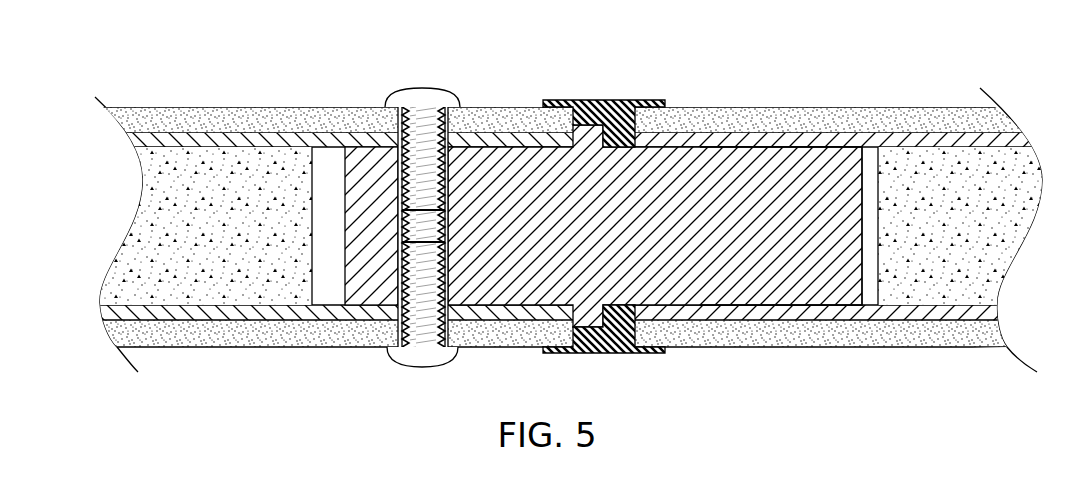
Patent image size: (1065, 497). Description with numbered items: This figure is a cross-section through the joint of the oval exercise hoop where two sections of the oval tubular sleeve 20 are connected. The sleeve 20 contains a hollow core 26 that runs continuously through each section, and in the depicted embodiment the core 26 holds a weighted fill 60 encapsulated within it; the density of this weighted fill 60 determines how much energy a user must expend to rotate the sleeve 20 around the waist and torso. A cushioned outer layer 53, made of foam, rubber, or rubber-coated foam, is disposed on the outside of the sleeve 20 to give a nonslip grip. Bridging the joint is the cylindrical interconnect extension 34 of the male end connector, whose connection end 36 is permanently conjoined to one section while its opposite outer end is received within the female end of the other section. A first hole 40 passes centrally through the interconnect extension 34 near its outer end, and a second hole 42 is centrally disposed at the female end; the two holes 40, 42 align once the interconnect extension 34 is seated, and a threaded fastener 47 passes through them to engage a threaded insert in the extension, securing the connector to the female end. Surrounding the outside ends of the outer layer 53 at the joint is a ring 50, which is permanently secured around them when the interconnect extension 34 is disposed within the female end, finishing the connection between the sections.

The oval tubular sleeve 20 is at (173, 135).
The cushioned outer layer 53 is at (253, 117).
The threaded fastener 47 is at (423, 98).
The second hole 42 is at (458, 120).
The ring 50 is at (612, 100).
The connection end 36 is at (852, 177).
The weighted fill 60 is at (948, 168).
The first hole 40 is at (400, 270).
The interconnect extension 34 is at (513, 275).
The hollow core 26 is at (925, 305).